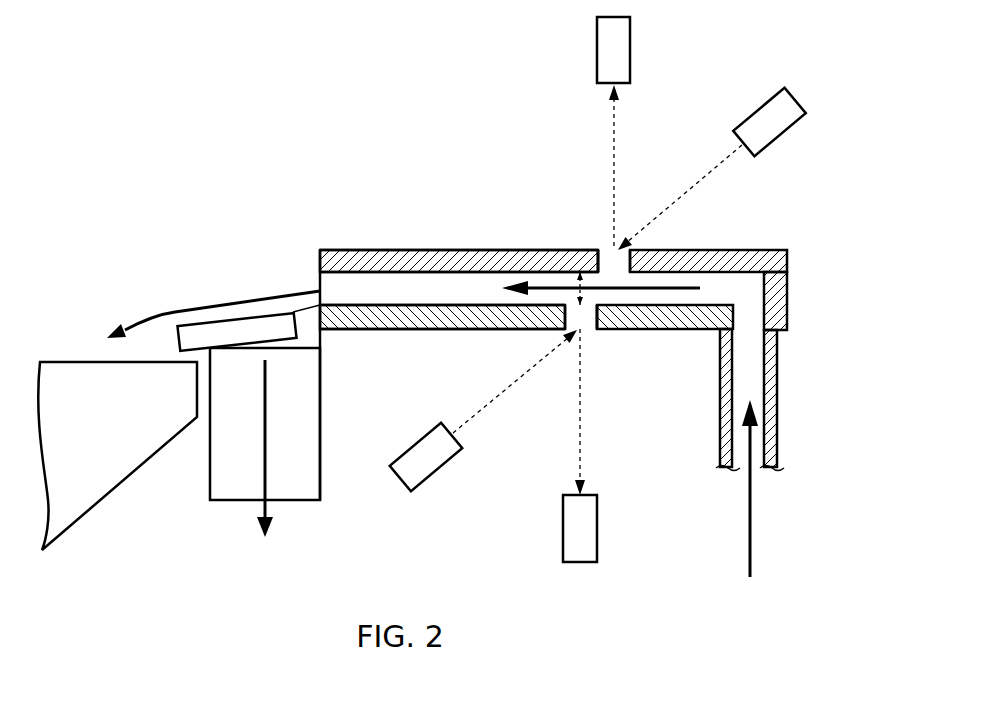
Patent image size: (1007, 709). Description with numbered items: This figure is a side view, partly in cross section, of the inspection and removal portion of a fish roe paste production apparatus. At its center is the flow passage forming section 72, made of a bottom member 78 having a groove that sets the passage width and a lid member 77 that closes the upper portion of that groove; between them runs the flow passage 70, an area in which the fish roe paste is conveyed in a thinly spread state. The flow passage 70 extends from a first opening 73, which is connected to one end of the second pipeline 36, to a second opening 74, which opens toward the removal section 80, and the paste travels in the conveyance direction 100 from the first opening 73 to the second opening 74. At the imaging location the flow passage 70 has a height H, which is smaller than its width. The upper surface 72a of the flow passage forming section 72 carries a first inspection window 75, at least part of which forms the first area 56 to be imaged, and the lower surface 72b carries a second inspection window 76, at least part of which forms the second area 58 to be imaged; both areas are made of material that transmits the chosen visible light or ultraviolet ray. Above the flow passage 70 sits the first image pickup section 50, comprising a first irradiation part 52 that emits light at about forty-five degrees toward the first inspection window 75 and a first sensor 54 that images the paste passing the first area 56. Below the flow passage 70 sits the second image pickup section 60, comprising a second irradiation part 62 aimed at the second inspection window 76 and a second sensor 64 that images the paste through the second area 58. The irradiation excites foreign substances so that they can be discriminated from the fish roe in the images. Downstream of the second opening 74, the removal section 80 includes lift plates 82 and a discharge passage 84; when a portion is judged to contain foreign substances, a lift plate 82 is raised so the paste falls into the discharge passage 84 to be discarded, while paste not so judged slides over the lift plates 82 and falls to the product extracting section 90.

The second pipeline 36 is at (720, 455).
The first image pickup section 50 is at (692, 97).
The first irradiation part 52 is at (767, 100).
The first sensor 54 is at (597, 62).
The first area to be imaged 56 is at (614, 250).
The second area to be imaged 58 is at (577, 333).
The second image pickup section 60 is at (526, 464).
The second irradiation part 62 is at (448, 460).
The second sensor 64 is at (597, 533).
The flow passage 70 is at (440, 271).
The flow passage forming section 72 is at (518, 367).
The upper surface 72a is at (425, 250).
The lower surface 72b is at (403, 330).
The first opening 73 is at (745, 333).
The second opening 74 is at (316, 273).
The first inspection window 75 is at (598, 250).
The second inspection window 76 is at (603, 330).
The lid member 77 is at (357, 263).
The bottom member 78 is at (397, 317).
The removal section 80 is at (213, 356).
The lift plates 82 is at (218, 330).
The discharge passage 84 is at (210, 487).
The product extracting section 90 is at (89, 305).
The conveyance direction 100 is at (672, 287).
The height H is at (577, 277).